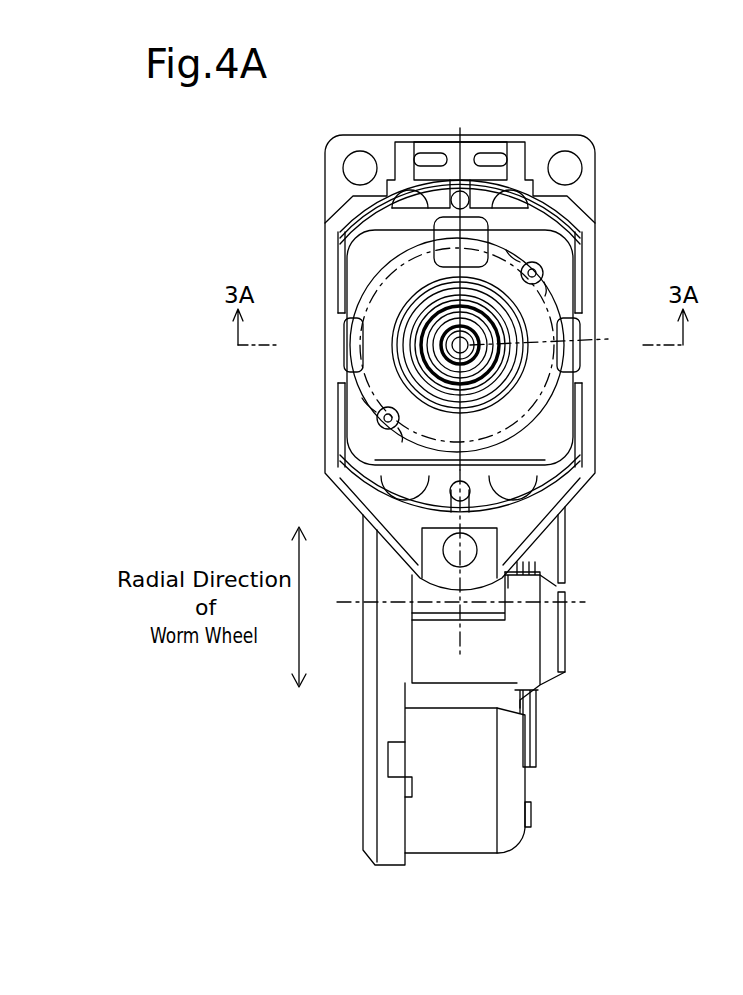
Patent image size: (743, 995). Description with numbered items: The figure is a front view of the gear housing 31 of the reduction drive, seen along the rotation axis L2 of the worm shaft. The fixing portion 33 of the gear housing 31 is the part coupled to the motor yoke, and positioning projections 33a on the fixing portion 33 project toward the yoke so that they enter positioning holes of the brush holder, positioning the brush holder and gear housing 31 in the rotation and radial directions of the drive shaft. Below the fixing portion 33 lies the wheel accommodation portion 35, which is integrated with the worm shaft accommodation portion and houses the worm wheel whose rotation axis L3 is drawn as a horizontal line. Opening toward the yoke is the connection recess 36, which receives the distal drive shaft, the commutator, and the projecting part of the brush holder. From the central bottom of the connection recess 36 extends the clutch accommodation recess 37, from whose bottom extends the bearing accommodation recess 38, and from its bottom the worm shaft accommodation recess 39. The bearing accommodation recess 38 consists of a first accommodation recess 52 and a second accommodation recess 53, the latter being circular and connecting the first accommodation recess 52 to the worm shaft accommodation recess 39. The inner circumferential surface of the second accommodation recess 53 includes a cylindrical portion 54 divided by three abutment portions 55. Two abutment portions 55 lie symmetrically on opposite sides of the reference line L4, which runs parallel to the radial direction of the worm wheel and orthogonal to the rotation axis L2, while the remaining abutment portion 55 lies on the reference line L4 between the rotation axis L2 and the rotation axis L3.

The gear housing 31 is at (597, 158).
The fixing portion 33 is at (585, 372).
The positioning projections 33a is at (460, 190).
The wheel accommodation portion 35 is at (512, 785).
The connection recess 36 is at (555, 449).
The clutch accommodation recess 37 is at (515, 387).
The bearing accommodation recess 38 is at (500, 305).
The worm shaft accommodation recess 39 is at (418, 353).
The first accommodation recess 52 is at (343, 324).
The second accommodation recess 53 is at (408, 325).
The cylindrical portion 54 is at (397, 375).
The abutment portions 55 is at (398, 302).
The rotation axis of the worm shaft L2 is at (553, 341).
The rotation axis of the worm wheel L3 is at (585, 603).
The reference line L4 is at (460, 635).